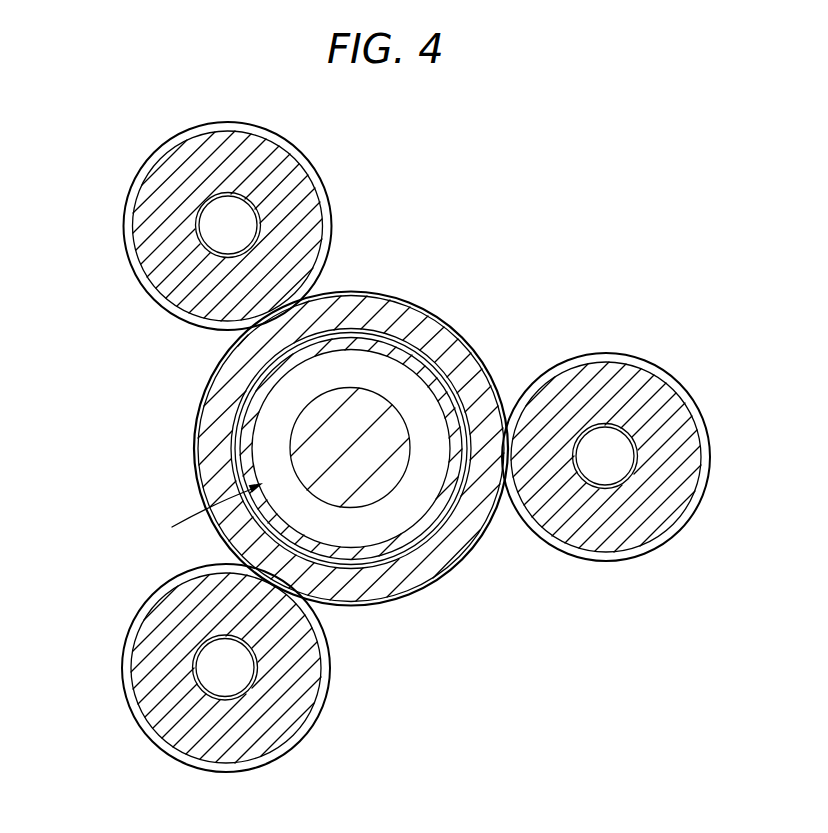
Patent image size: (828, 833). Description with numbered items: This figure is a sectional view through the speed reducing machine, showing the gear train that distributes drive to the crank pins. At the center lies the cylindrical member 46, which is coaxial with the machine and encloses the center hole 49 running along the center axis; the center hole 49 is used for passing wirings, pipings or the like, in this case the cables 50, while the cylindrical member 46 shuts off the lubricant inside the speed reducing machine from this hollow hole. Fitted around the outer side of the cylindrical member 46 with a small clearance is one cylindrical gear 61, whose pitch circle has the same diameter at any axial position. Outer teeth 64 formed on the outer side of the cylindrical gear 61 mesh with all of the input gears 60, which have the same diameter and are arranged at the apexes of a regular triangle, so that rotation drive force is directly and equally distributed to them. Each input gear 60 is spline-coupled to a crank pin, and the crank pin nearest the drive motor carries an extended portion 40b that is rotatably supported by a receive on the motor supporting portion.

The extended portion 40b is at (238, 228).
The cylindrical member 46 is at (358, 553).
The center hole 49 is at (201, 512).
The cables 50 is at (385, 485).
The input gears 60 is at (135, 228).
The cylindrical gear 61 is at (207, 460).
The outer teeth 64 is at (445, 323).